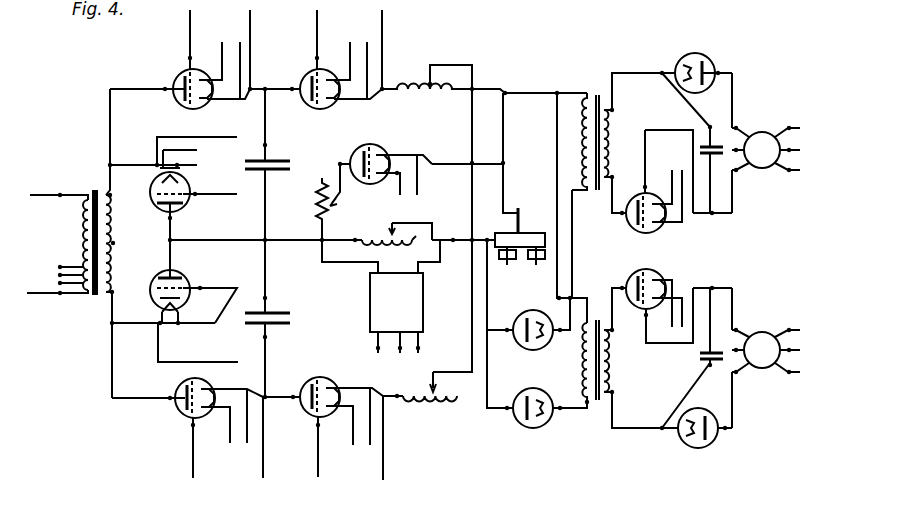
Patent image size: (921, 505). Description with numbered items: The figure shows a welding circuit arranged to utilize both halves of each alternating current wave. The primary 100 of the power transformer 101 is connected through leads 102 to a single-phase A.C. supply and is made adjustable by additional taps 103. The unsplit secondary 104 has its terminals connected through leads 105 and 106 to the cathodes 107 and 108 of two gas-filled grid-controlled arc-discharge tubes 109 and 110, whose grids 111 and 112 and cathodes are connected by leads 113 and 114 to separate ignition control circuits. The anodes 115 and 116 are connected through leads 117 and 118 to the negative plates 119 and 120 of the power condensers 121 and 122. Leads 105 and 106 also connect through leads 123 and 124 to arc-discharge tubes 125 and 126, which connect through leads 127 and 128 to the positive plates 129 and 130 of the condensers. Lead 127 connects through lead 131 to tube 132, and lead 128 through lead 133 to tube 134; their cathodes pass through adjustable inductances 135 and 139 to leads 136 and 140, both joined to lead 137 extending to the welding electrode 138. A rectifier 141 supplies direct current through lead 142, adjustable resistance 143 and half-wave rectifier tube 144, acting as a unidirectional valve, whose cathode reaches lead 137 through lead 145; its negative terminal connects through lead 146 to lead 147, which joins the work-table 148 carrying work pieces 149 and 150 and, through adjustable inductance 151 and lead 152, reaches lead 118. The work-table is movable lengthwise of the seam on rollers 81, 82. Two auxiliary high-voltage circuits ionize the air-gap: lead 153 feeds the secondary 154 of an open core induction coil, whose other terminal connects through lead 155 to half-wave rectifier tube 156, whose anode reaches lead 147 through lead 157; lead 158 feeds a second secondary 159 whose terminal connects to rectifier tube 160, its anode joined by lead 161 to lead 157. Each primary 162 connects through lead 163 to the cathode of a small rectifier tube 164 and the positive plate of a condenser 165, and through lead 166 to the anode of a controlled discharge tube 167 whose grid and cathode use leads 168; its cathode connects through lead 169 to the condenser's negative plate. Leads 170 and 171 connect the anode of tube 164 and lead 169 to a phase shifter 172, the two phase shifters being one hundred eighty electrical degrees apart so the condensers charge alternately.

The roller 81 is at (510, 265).
The roller 82 is at (530, 265).
The primary 100 is at (80, 222).
The power transformer 101 is at (92, 197).
The leads 102 is at (45, 297).
The taps 103 is at (66, 266).
The secondary 104 is at (114, 262).
The lead 105 is at (118, 304).
The lead 106 is at (118, 176).
The cathode 107 is at (188, 303).
The cathode 108 is at (184, 176).
The gas-filled grid-controlled arc-discharge tube 109 is at (155, 276).
The gas-filled grid-controlled arc-discharge tube 110 is at (152, 200).
The grid 111 is at (190, 286).
The grid 112 is at (187, 194).
The lead 113 is at (217, 360).
The lead 114 is at (237, 194).
The anode 115 is at (182, 276).
The anode 116 is at (183, 205).
The lead 117 is at (171, 256).
The lead 118 is at (266, 240).
The negative plate 119 is at (284, 171).
The negative plate 120 is at (275, 310).
The power condenser 121 is at (286, 162).
The power condenser 122 is at (295, 322).
The lead 123 is at (112, 367).
The lead 124 is at (142, 87).
The gas-filled grid-controlled arc-discharge tube 125 is at (178, 412).
The gas-filled grid-controlled arc-discharge tube 126 is at (178, 76).
The lead 127 is at (252, 386).
The lead 128 is at (265, 112).
The positive plate 129 is at (290, 325).
The positive plate 130 is at (272, 150).
The lead 131 is at (286, 400).
The gas-filled grid-controlled arc-discharge tube 132 is at (306, 412).
The lead 133 is at (270, 88).
The gas-filled grid-controlled arc-discharge tube 134 is at (327, 69).
The adjustable inductance 135 is at (420, 400).
The lead 136 is at (470, 310).
The lead 137 is at (505, 135).
The welding electrode 138 is at (518, 208).
The adjustable inductance 139 is at (415, 80).
The lead 140 is at (470, 66).
The rectifier 141 is at (395, 317).
The lead 142 is at (330, 262).
The adjustable resistance 143 is at (332, 195).
The half-wave rectifier tube 144 is at (372, 145).
The lead 145 is at (450, 163).
The lead 146 is at (440, 262).
The lead 147 is at (468, 240).
The work-table 148 is at (528, 262).
The work piece 149 is at (497, 232).
The work piece 150 is at (527, 232).
The adjustable inductance 151 is at (392, 232).
The lead 152 is at (268, 242).
The lead 153 is at (527, 88).
The secondary 154 is at (584, 140).
The lead 155 is at (573, 221).
The half-wave rectifier tube 156 is at (543, 312).
The lead 157 is at (492, 310).
The lead 158 is at (562, 262).
The secondary 159 is at (587, 372).
The half-wave rectifier tube 160 is at (540, 428).
The lead 161 is at (489, 380).
The primary 162 is at (612, 380).
The lead 163 is at (618, 432).
The small half-wave rectifier tube 164 is at (697, 448).
The condenser 165 is at (699, 360).
The lead 166 is at (613, 298).
The gas-filled grid-controlled discharge tube 167 is at (646, 234).
The leads 168 is at (692, 343).
The lead 169 is at (716, 287).
The lead 170 is at (733, 405).
The lead 171 is at (735, 300).
The phase shifter 172 is at (758, 333).